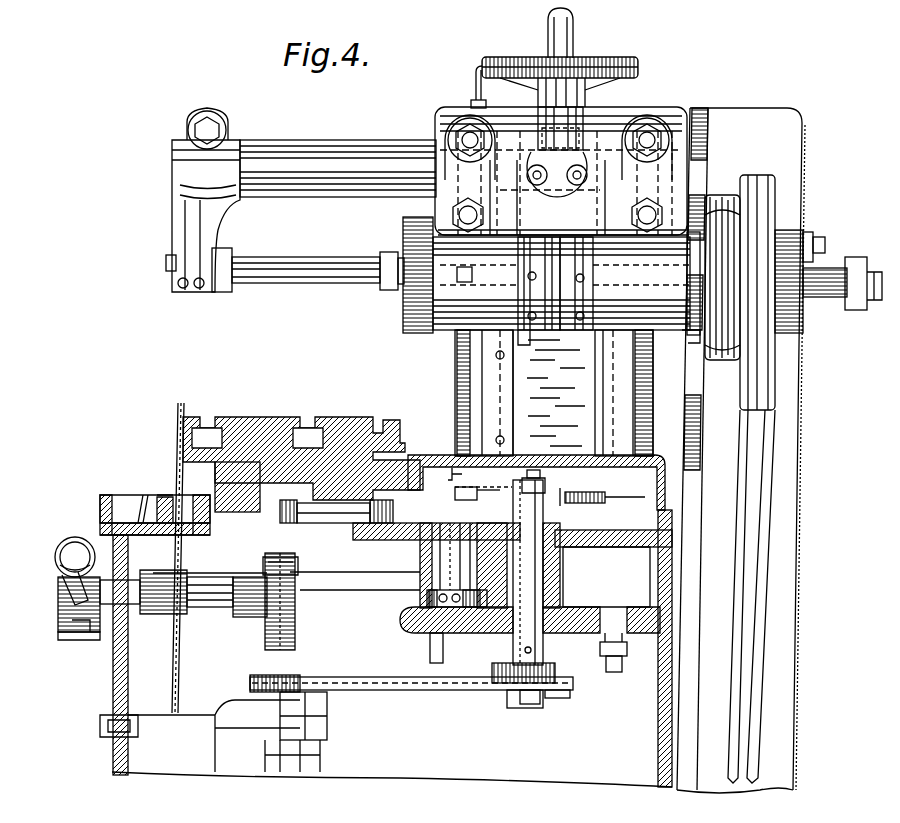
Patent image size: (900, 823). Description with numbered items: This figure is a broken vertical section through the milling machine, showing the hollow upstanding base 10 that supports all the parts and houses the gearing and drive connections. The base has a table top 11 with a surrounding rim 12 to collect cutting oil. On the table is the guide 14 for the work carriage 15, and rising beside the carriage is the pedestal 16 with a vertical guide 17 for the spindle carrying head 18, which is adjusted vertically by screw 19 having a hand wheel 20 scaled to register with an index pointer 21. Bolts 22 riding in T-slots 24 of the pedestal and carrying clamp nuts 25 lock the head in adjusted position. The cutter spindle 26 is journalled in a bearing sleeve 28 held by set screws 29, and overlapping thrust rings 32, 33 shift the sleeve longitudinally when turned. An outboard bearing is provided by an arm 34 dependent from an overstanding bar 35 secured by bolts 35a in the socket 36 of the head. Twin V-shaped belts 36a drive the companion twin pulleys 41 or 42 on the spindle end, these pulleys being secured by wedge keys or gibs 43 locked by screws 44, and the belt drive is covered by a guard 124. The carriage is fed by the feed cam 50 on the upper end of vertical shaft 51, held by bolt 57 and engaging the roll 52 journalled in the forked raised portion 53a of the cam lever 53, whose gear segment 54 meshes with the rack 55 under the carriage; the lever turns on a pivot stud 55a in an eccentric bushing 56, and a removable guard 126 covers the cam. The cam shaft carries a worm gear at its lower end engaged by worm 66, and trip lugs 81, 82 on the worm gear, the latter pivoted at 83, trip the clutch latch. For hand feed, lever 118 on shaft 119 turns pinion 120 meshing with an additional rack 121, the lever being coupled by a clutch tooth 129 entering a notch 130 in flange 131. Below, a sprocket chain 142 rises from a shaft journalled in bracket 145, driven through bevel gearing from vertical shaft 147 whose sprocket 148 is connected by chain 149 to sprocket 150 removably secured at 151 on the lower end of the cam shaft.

The hollow upstanding base 10 is at (112, 706).
The table top 11 is at (142, 500).
The surrounding rim 12 is at (100, 502).
The guide 14 is at (215, 479).
The work carriage 15 is at (264, 418).
The pedestal 16 is at (452, 382).
The vertical guide 17 is at (556, 393).
The spindle carrying head 18 is at (616, 112).
The screw 19 is at (555, 332).
The hand wheel 20 is at (600, 66).
The index pointer 21 is at (476, 76).
The bolts 22 is at (432, 215).
The T-slots 24 is at (455, 400).
The clamp nuts 25 is at (488, 218).
The cutter spindle 26 is at (318, 258).
The bearing sleeve 28 is at (690, 336).
The set screws 29 is at (458, 268).
The thrust ring 32 is at (535, 334).
The thrust ring 33 is at (588, 332).
The arm 34 is at (176, 236).
The overstanding bar 35 is at (323, 147).
The bolts 35a is at (452, 122).
The socket 36 is at (447, 140).
The twin V-shaped belts 36a is at (755, 600).
The twin pulleys 41 is at (758, 180).
The twin pulleys 42 is at (721, 362).
The wedge keys or gibs 43 is at (808, 240).
The screws 44 is at (828, 252).
The feed cam 50 is at (565, 496).
The vertical shaft 51 is at (514, 640).
The roll 52 is at (480, 492).
The cam lever 53 is at (345, 525).
The forked raised portion 53a is at (445, 471).
The gear segment 54 is at (325, 524).
The rack 55 is at (297, 523).
The pivot stud 55a is at (422, 587).
The eccentric bushing 56 is at (428, 566).
The bolt 57 is at (532, 476).
The worm 66 is at (400, 620).
The trip lug 81 is at (430, 653).
The trip lug 82 is at (615, 670).
The pivot 83 is at (600, 650).
The hand feed lever 118 is at (60, 552).
The shaft 119 is at (58, 600).
The pinion 120 is at (281, 652).
The additional rack 121 is at (268, 555).
The guard 124 is at (798, 446).
The removable guard 126 is at (568, 455).
The clutch tooth 129 is at (62, 628).
The notch 130 is at (78, 628).
The flange 131 is at (60, 580).
The sprocket chain 142 is at (172, 441).
The bracket 145 is at (204, 716).
The vertical shaft 147 is at (318, 754).
The sprocket 148 is at (256, 674).
The chain 149 is at (432, 690).
The sprocket 150 is at (565, 696).
The securing means 151 is at (538, 708).